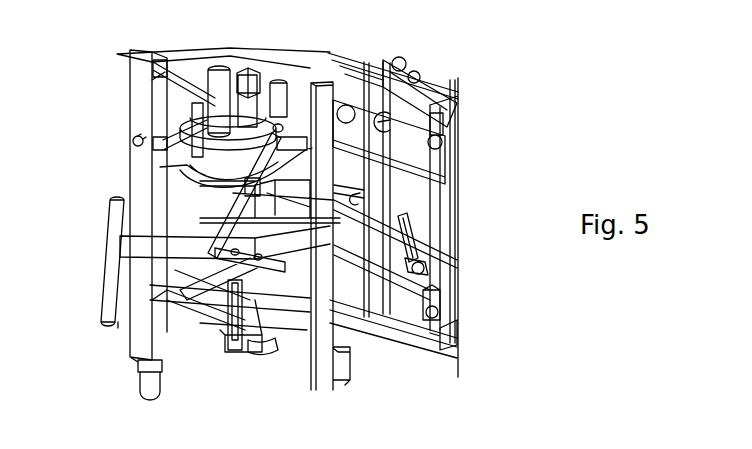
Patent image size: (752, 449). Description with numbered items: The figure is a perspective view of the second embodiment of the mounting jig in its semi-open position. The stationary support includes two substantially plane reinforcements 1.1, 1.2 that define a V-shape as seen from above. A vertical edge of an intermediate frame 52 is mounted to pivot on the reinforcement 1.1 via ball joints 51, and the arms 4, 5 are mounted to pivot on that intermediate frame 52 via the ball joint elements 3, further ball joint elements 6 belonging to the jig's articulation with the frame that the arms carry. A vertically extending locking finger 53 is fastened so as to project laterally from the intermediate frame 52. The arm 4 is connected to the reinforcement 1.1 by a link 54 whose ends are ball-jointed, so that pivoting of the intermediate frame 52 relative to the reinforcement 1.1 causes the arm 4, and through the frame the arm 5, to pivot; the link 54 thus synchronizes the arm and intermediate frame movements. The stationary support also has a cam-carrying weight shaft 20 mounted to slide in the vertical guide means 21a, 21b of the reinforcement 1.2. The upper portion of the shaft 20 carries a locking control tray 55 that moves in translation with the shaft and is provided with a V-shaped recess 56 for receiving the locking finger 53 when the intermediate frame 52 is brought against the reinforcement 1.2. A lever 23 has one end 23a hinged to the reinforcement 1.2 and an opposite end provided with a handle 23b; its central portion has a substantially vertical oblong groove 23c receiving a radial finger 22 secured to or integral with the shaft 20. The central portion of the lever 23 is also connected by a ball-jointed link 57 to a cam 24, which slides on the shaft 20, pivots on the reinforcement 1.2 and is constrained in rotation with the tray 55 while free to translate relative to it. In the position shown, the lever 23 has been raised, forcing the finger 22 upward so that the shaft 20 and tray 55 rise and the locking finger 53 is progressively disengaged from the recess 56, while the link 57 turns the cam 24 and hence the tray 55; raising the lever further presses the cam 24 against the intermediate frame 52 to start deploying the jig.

The reinforcement 1.1 is at (160, 118).
The reinforcement 1.2 is at (190, 347).
The ball joint element 3 is at (455, 143).
The arm 4 is at (392, 55).
The arm 5 is at (413, 53).
The ball joint element 6 is at (355, 195).
The cam-carrying weight shaft 20 is at (157, 342).
The vertical guide means 21a is at (222, 66).
The vertical guide means 21b is at (233, 340).
The radial finger 22 is at (243, 360).
The lever 23 is at (160, 240).
The end of lever 23a is at (397, 337).
The handle 23b is at (110, 297).
The oblong groove 23c is at (266, 350).
The cam 24 is at (280, 128).
The ball joint 51 is at (178, 258).
The intermediate frame 52 is at (450, 347).
The locking finger 53 is at (420, 232).
The link 54 is at (347, 53).
The locking control tray 55 is at (157, 165).
The V-shaped recess 56 is at (250, 200).
The link 57 is at (428, 270).